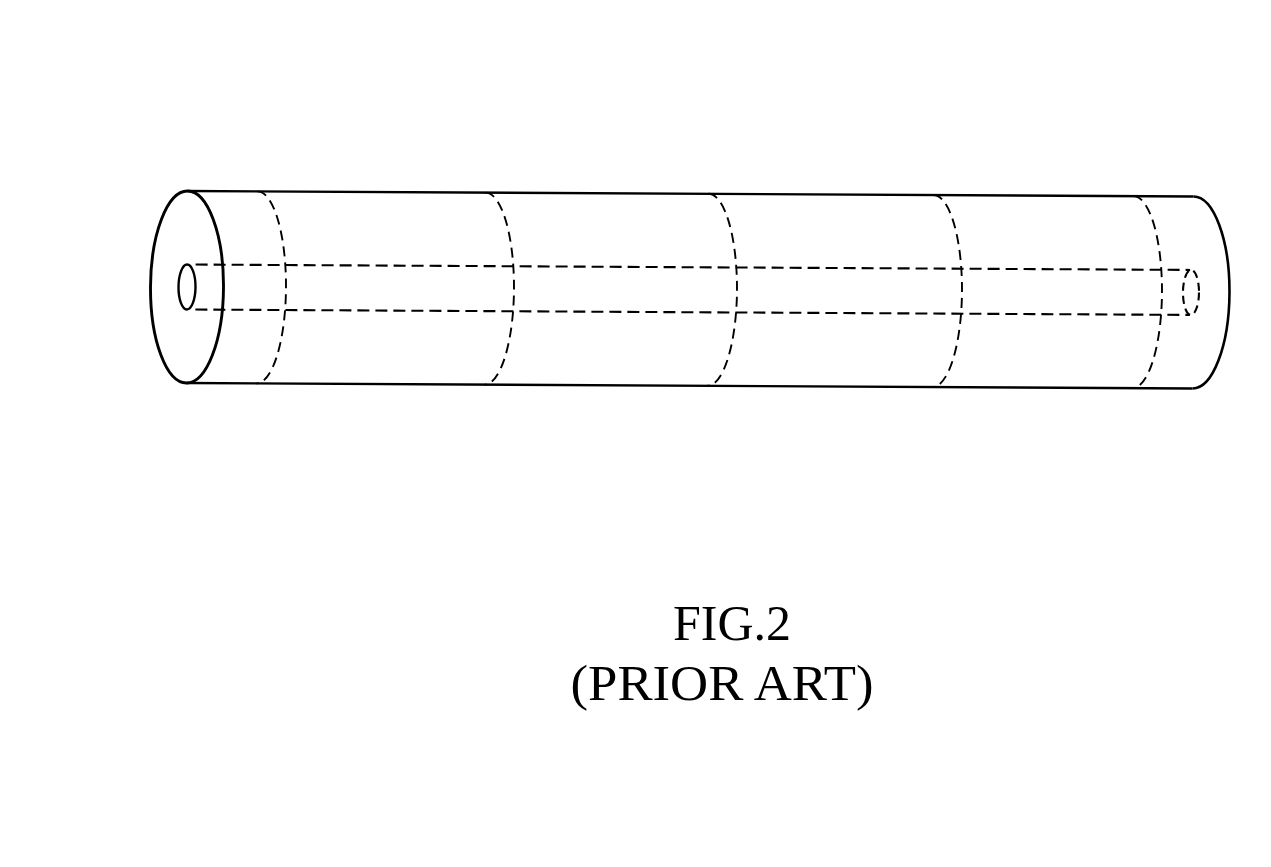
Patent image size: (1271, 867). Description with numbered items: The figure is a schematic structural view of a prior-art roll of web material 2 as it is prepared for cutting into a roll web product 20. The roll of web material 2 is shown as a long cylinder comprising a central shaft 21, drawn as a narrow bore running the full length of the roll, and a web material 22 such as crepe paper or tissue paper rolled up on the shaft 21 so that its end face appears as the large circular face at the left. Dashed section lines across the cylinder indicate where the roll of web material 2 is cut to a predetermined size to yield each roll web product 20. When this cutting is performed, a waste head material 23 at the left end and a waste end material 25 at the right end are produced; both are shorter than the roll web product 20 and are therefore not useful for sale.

The roll of web material 2 is at (203, 77).
The roll web product 20 is at (373, 191).
The shaft 21 is at (178, 283).
The web material 22 is at (174, 209).
The waste head material 23 is at (227, 190).
The waste end material 25 is at (1174, 196).